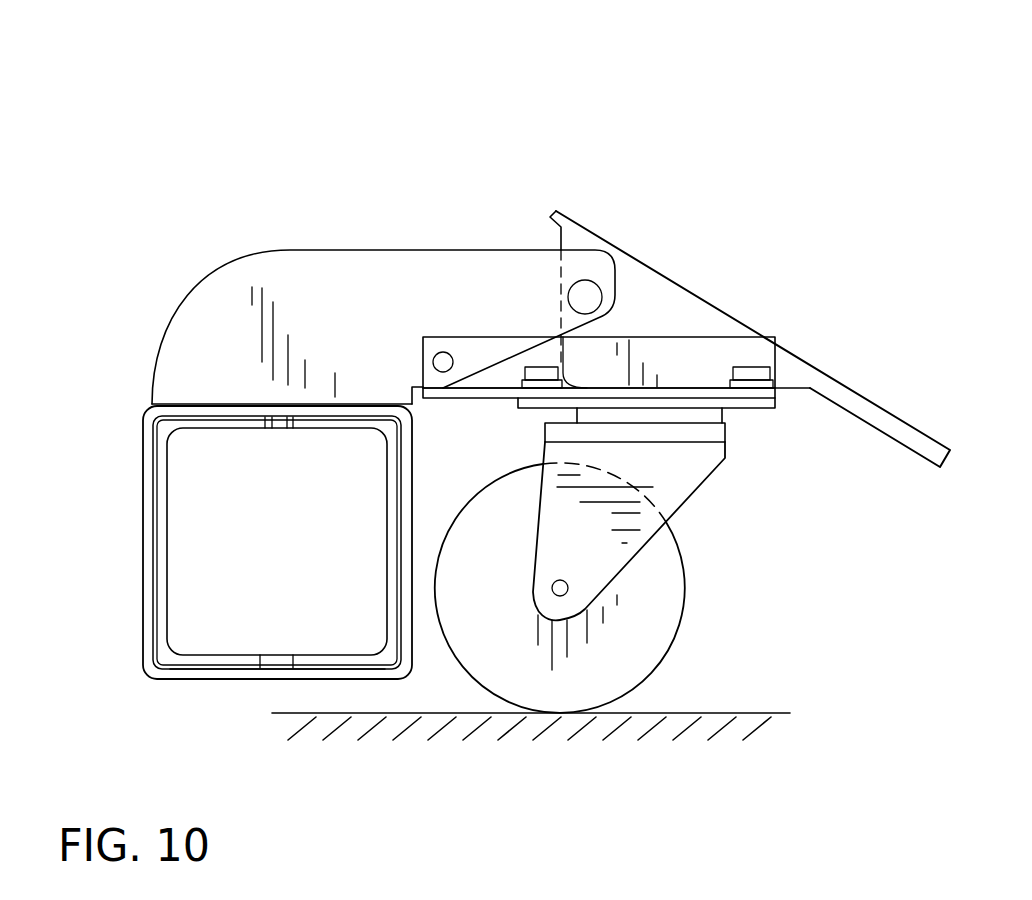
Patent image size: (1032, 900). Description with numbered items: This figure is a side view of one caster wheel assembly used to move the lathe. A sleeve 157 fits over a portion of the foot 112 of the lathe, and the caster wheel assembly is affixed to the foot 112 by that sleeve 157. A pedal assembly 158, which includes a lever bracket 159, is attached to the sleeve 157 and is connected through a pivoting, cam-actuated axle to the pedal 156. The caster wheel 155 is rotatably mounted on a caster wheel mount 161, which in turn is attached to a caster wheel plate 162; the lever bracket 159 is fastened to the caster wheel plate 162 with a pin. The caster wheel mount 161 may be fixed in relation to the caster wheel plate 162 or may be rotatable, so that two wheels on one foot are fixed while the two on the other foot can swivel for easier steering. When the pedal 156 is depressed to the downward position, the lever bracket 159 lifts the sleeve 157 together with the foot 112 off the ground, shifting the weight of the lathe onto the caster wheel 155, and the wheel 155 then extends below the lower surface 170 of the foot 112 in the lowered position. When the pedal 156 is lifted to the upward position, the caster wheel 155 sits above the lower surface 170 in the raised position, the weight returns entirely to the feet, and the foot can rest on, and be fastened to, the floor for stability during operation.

The pedal assembly 158 is at (675, 84).
The lever bracket 159 is at (208, 302).
The pedal 156 is at (637, 278).
The caster wheel plate 162 is at (698, 348).
The caster wheel mount 161 is at (683, 473).
The caster wheel 155 is at (662, 617).
The sleeve 157 is at (147, 561).
The foot 112 is at (165, 630).
The lower surface 170 is at (223, 670).